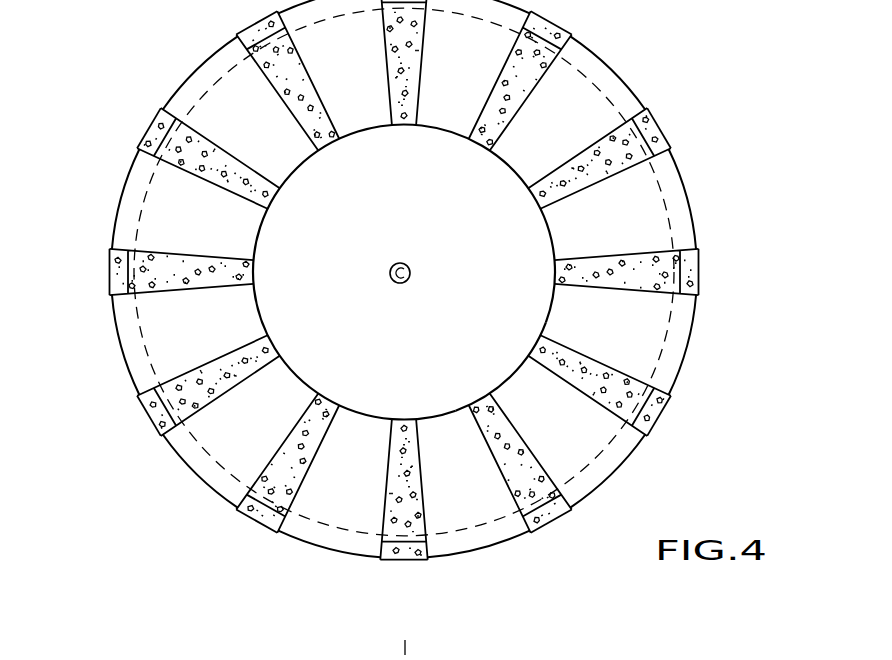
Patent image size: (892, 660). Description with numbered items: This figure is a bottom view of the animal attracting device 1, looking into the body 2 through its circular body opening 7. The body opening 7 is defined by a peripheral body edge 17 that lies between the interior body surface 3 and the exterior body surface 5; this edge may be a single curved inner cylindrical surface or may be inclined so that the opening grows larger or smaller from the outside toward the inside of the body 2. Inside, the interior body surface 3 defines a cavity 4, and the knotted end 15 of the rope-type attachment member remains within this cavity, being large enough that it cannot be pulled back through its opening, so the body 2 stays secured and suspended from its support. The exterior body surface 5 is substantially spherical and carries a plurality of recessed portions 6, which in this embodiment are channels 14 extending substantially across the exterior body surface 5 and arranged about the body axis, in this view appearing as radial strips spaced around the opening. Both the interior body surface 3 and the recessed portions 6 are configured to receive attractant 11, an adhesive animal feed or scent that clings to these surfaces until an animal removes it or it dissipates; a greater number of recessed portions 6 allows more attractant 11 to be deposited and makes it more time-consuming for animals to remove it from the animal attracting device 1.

The animal attracting device 1 is at (112, 62).
The body 2 is at (207, 65).
The interior body surface 3 is at (654, 214).
The cavity 4 is at (363, 237).
The exterior body surface 5 is at (120, 190).
The recessed portion 6 is at (140, 400).
The body opening 7 is at (520, 298).
The attractant 11 is at (130, 262).
The channel 14 is at (150, 424).
The knotted end 15 is at (400, 284).
The peripheral body edge 17 is at (507, 378).